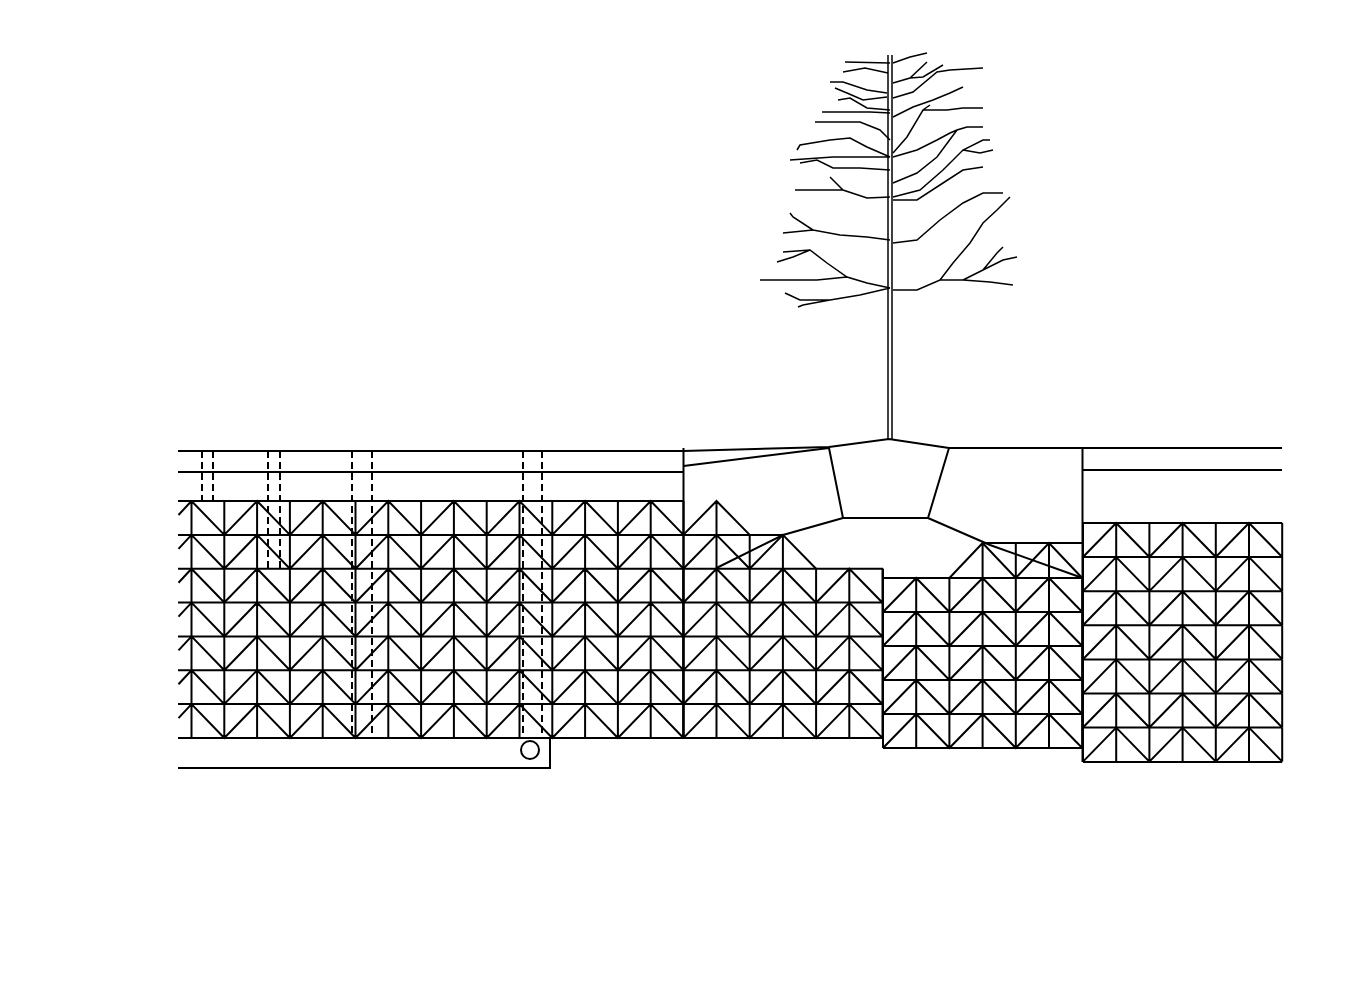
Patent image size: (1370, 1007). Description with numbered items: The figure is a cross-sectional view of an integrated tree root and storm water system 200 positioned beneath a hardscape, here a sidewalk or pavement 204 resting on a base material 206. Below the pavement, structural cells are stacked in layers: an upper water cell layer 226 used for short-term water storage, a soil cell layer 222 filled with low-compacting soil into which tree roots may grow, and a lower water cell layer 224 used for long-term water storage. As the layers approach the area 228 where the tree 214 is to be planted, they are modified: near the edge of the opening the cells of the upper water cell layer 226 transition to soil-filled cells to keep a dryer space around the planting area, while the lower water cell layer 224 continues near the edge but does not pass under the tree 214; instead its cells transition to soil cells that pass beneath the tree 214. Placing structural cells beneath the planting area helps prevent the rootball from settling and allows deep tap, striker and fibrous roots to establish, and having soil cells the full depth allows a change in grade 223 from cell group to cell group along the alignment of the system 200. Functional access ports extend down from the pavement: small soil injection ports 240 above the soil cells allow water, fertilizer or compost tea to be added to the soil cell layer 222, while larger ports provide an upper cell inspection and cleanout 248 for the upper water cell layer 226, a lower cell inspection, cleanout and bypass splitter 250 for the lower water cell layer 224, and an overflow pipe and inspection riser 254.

The integrated tree root and storm water system 200 is at (621, 791).
The sidewalk or pavement 204 is at (187, 462).
The base material 206 is at (188, 489).
The tree 214 is at (895, 316).
The soil cell layer 222 is at (160, 570).
The change in grade 223 is at (885, 750).
The lower water cell layer 224 is at (160, 670).
The upper water cell layer 226 is at (160, 503).
The tree planting area 228 is at (1015, 392).
The soil injection ports 240 is at (208, 447).
The upper cell inspection and cleanout 248 is at (277, 447).
The lower cell inspection, cleanout and bypass splitter 250 is at (363, 448).
The overflow pipe and inspection riser 254 is at (530, 445).